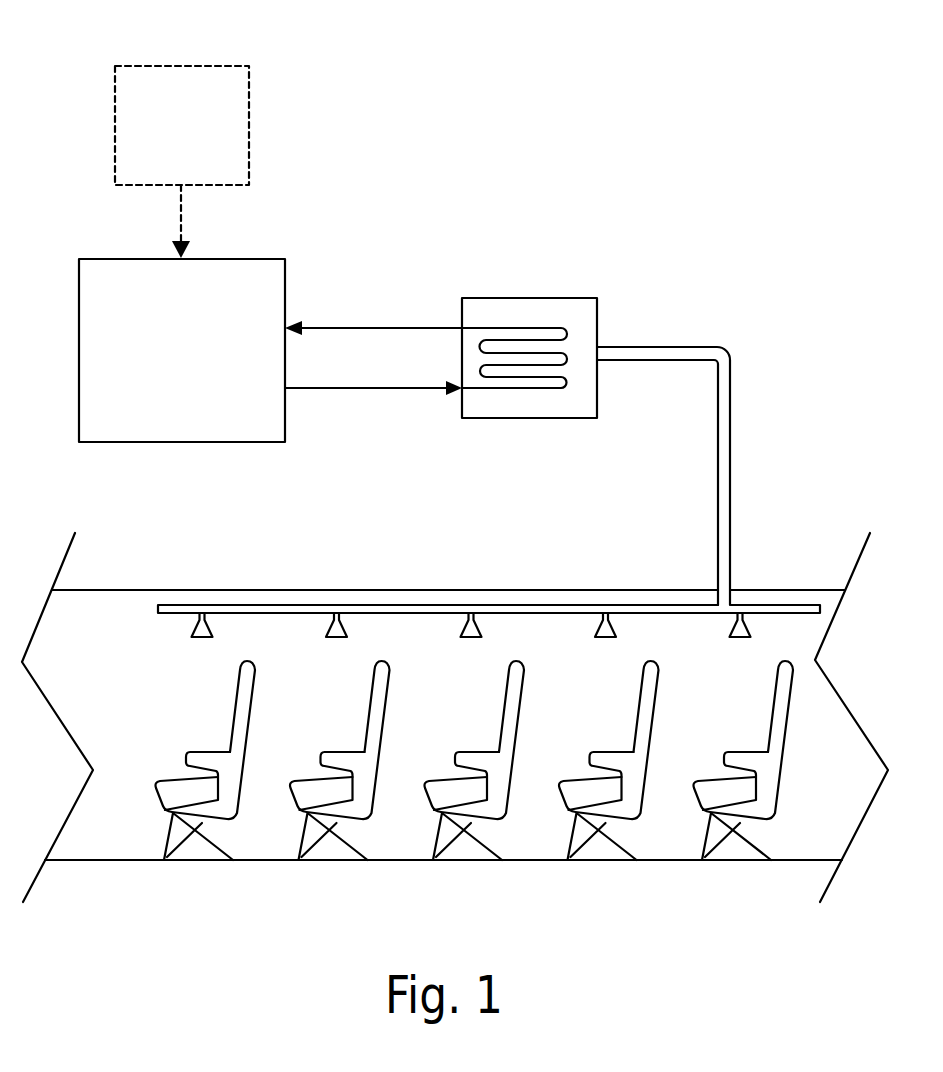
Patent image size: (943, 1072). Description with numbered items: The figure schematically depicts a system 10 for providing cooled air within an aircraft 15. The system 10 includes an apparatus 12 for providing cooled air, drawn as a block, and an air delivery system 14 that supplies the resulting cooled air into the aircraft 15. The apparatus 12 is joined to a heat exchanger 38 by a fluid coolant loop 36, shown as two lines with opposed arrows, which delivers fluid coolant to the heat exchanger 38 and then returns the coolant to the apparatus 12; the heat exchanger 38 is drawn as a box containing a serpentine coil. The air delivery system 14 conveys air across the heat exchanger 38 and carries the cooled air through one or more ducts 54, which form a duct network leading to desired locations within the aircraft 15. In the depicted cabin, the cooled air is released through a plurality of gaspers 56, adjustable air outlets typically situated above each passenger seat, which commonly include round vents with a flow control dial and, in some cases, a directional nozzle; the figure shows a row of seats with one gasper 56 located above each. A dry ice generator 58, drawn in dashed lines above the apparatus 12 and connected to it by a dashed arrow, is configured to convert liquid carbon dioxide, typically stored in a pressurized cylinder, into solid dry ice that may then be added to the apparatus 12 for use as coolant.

The system 10 is at (563, 100).
The apparatus 12 is at (312, 233).
The air delivery system 14 is at (667, 300).
The aircraft 15 is at (480, 563).
The fluid coolant loop 36 is at (380, 325).
The heat exchanger 38 is at (520, 325).
The duct 54 is at (731, 486).
The gasper 56 is at (200, 640).
The dry ice generator 58 is at (250, 130).